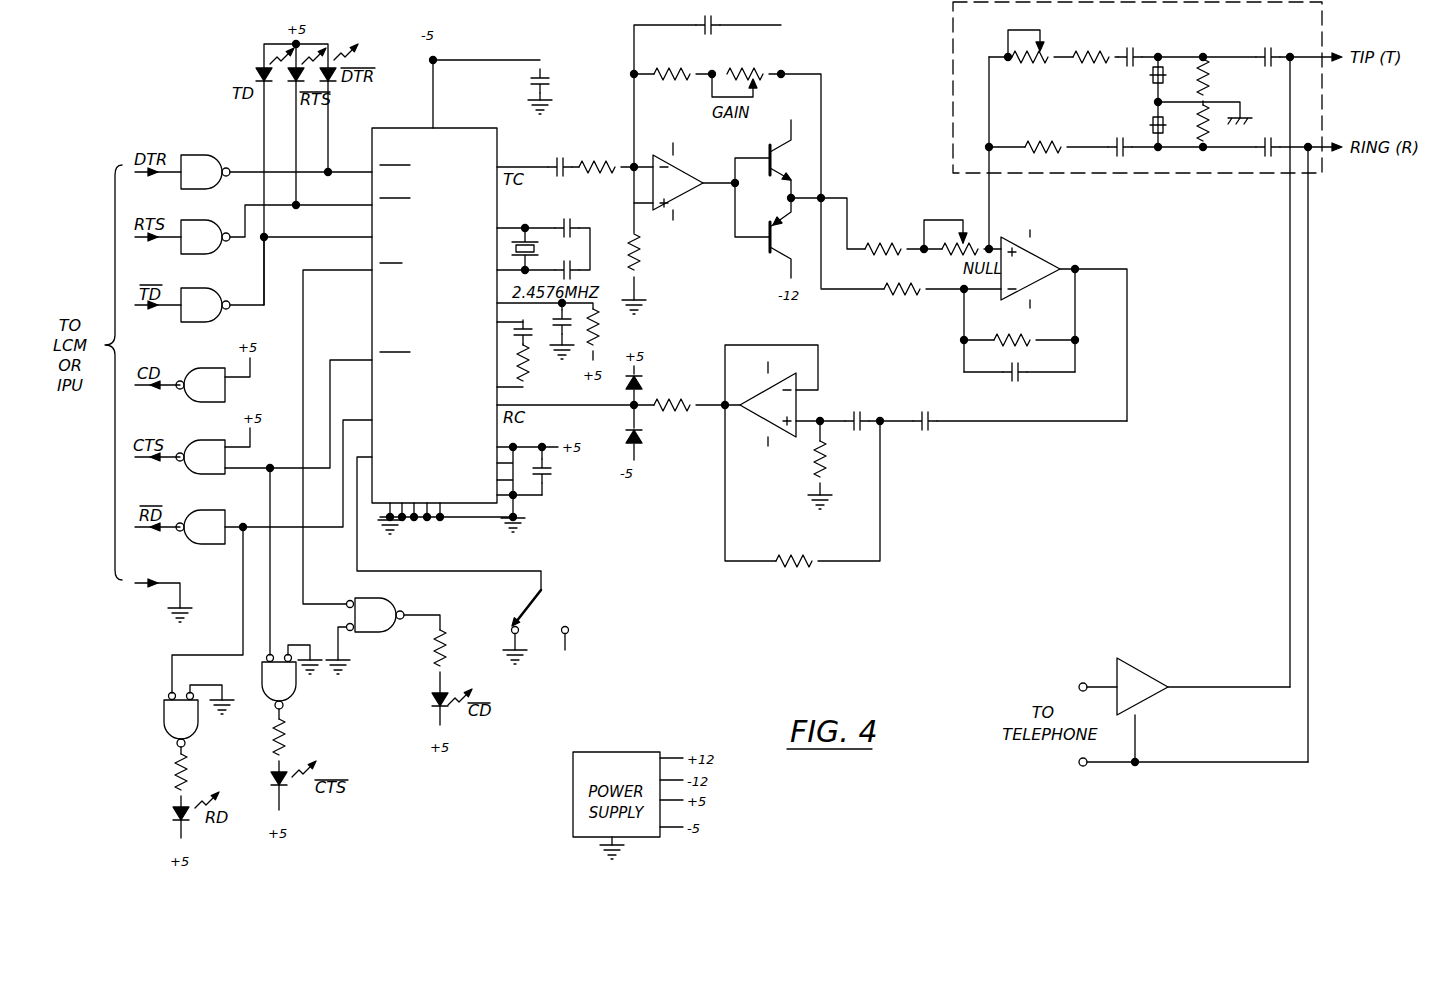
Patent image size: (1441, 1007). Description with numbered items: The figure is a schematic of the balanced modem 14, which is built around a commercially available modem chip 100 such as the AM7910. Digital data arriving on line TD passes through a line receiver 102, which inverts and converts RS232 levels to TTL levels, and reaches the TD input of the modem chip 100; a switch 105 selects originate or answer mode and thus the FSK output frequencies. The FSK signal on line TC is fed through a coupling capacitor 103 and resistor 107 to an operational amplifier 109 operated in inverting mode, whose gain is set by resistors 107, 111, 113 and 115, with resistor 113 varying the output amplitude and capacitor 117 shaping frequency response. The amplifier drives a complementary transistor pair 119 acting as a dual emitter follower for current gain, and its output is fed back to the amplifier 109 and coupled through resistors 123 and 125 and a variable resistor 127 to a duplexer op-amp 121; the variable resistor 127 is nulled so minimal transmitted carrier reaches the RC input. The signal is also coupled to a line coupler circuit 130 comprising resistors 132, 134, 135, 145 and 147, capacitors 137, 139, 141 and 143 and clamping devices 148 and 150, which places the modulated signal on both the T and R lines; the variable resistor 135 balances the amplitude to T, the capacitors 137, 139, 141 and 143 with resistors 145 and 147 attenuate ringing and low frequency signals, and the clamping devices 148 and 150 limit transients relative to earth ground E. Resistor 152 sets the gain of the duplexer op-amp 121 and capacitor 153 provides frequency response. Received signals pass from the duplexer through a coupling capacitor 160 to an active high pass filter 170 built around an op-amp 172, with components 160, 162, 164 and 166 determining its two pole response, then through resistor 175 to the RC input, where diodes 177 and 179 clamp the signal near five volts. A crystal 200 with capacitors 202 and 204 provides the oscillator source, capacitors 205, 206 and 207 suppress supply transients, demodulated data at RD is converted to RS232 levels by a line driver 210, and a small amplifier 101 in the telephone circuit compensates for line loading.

The balanced modem 14 is at (752, 615).
The modem chip 100 is at (458, 128).
The amplifier 101 is at (1150, 683).
The line receiver 102 is at (207, 322).
The coupling capacitor 103 is at (555, 162).
The switch 105 is at (548, 593).
The resistor 107 is at (610, 153).
The operational amplifier 109 is at (690, 196).
The resistor 111 is at (676, 68).
The resistor 113 is at (748, 68).
The resistor 115 is at (642, 262).
The capacitor 117 is at (714, 24).
The complementary transistor pair 119 is at (768, 150).
The op-amp 121 is at (1043, 260).
The resistor 123 is at (882, 244).
The resistor 125 is at (888, 285).
The variable resistor 127 is at (960, 232).
The line coupler circuit 130 is at (952, 80).
The resistor 132 is at (1040, 140).
The resistor 134 is at (1097, 50).
The variable resistor 135 is at (1039, 66).
The capacitor 137 is at (1116, 140).
The capacitor 139 is at (1135, 50).
The capacitor 141 is at (1272, 50).
The capacitor 143 is at (1272, 160).
The resistor 145 is at (1212, 78).
The resistor 147 is at (1212, 142).
The clamping device 148 is at (1158, 140).
The clamping device 150 is at (1150, 78).
The resistor 152 is at (1008, 334).
The capacitor 153 is at (1012, 368).
The coupling capacitor 160 is at (932, 428).
The capacitor 162 is at (870, 416).
The resistor 164 is at (830, 466).
The resistor 166 is at (806, 554).
The active high pass filter 170 is at (926, 456).
The op-amp 172 is at (778, 425).
The resistor 175 is at (680, 400).
The diode 177 is at (646, 380).
The diode 179 is at (646, 438).
The crystal 200 is at (528, 240).
The capacitor 202 is at (574, 220).
The capacitor 204 is at (575, 262).
The capacitor 205 is at (547, 62).
The capacitor 206 is at (557, 330).
The capacitor 207 is at (550, 480).
The line driver 210 is at (210, 545).